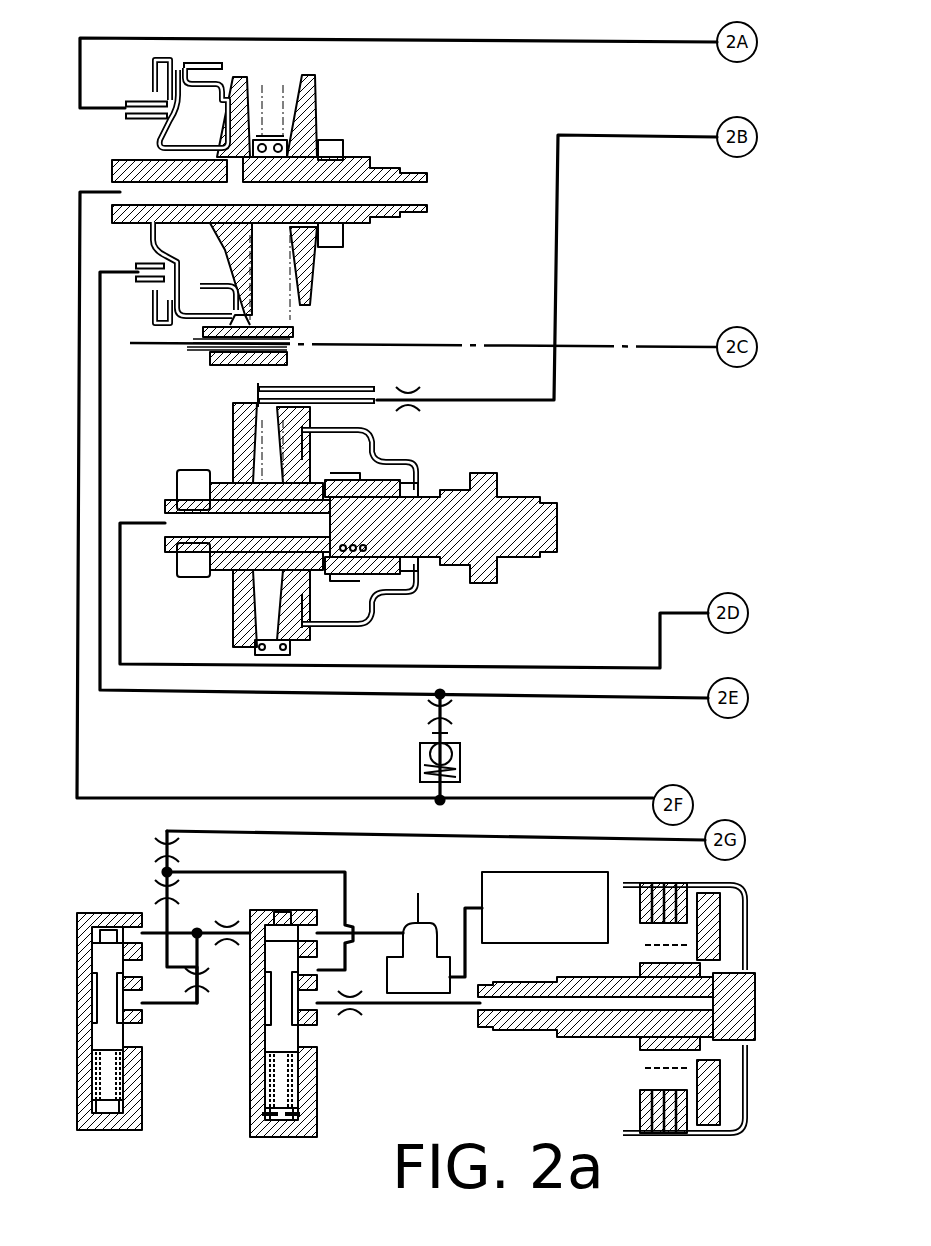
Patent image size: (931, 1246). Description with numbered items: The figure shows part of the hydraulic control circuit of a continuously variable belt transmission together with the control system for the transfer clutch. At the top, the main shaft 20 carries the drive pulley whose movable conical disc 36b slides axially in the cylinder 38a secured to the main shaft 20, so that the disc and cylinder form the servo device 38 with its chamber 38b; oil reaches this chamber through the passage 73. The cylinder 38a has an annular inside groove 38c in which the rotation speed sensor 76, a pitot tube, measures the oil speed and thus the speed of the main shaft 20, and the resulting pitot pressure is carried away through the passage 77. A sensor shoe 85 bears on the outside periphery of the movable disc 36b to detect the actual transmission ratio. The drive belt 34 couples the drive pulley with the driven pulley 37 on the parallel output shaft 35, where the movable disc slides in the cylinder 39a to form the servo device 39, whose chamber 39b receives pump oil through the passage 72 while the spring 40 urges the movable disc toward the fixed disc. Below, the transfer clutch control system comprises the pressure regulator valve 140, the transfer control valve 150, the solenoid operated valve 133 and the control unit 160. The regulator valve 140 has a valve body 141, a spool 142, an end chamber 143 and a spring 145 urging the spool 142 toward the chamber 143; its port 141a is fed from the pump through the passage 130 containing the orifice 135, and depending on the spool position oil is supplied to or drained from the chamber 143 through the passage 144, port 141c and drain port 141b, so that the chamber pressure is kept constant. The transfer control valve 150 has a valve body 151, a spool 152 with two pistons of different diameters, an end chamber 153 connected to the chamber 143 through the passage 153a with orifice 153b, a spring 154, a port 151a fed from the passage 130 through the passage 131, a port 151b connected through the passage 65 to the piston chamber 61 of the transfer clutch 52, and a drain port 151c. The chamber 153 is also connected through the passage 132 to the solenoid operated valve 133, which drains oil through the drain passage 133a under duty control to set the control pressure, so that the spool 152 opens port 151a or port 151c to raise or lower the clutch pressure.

The main shaft 20 is at (365, 166).
The drive belt 34 is at (278, 138).
The output shaft 35 is at (561, 524).
The movable conical disc 36b is at (246, 99).
The driven pulley 37 is at (296, 652).
The servo device 38 is at (184, 164).
The cylinder 38a is at (212, 62).
The chamber 38b is at (196, 108).
The annular inside groove 38c is at (152, 68).
The servo device 39 is at (377, 532).
The cylinder 39a is at (356, 620).
The chamber 39b is at (350, 454).
The spring 40 is at (406, 460).
The transfer clutch 52 is at (625, 1008).
The piston chamber 61 is at (723, 1095).
The passage 65 is at (458, 1012).
The passage 72 is at (562, 650).
The passage 73 is at (586, 782).
The rotation speed sensor 76 is at (144, 82).
The passage 77 is at (505, 42).
The sensor shoe 85 is at (290, 325).
The passage 130 is at (462, 843).
The passage 131 is at (286, 848).
The passage 132 is at (388, 906).
The solenoid operated valve 133 is at (425, 911).
The drain passage 133a is at (414, 907).
The orifice 135 is at (155, 885).
The pressure regulator valve 140 is at (123, 992).
The valve body 141 is at (72, 915).
The port 141a is at (176, 983).
The drain port 141b is at (136, 1033).
The port 141c is at (142, 1010).
The spool 142 is at (100, 1040).
The end chamber 143 is at (92, 910).
The passage 144 is at (176, 1003).
The spring 145 is at (123, 1105).
The transfer control valve 150 is at (294, 1020).
The valve body 151 is at (264, 1116).
The port 151a is at (329, 974).
The port 151b is at (325, 1010).
The drain port 151c is at (321, 1040).
The spool 152 is at (272, 1040).
The end chamber 153 is at (300, 922).
The passage 153a is at (216, 922).
The orifice 153b is at (236, 920).
The spring 154 is at (286, 1128).
The control unit 160 is at (598, 870).